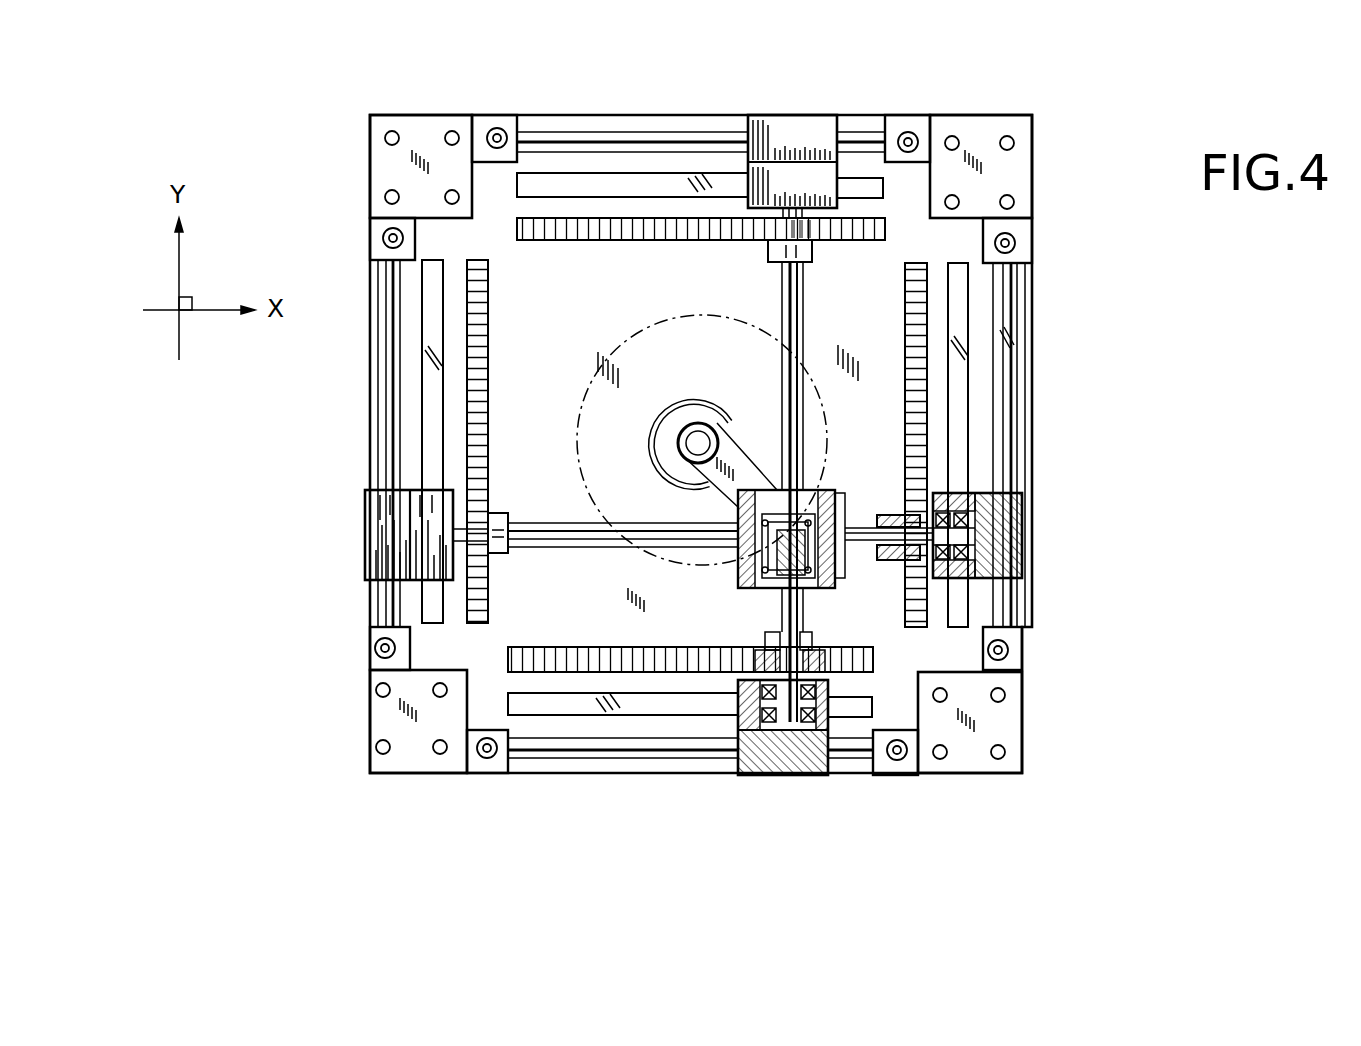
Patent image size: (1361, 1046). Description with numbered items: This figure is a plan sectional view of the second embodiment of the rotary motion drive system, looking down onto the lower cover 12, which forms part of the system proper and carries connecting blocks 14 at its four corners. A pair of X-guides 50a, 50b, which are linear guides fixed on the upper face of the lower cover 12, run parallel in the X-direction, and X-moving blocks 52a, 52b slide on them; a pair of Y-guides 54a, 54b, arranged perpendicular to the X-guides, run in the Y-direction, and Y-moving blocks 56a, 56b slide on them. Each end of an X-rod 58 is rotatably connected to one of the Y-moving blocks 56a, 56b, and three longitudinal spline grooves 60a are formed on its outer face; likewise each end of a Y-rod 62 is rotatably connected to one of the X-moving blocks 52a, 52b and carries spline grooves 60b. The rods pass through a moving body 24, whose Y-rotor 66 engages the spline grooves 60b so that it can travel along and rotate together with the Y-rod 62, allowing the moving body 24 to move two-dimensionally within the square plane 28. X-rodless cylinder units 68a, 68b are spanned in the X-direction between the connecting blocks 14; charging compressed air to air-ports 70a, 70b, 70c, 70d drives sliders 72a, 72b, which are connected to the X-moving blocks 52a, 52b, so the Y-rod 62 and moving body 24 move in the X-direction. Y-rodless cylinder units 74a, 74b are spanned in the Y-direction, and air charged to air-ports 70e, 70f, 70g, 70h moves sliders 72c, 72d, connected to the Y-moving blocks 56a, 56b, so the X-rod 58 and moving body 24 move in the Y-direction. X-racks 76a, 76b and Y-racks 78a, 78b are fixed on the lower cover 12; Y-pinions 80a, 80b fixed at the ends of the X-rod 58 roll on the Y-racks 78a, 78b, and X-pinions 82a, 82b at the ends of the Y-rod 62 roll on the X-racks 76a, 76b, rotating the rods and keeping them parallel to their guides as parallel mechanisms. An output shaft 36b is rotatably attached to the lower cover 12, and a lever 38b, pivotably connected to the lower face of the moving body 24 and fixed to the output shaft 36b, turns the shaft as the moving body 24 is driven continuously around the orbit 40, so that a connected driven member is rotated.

The lower cover 12 is at (493, 197).
The connecting blocks 14 is at (380, 160).
The moving body 24 is at (838, 583).
The square plane 28 is at (510, 378).
The output shaft 36b is at (697, 440).
The lever 38b is at (727, 493).
The orbit 40 is at (640, 545).
The X-guide 50a is at (585, 185).
The X-guide 50b is at (547, 705).
The X-moving block 52a is at (775, 165).
The X-moving block 52b is at (735, 703).
The Y-guide 54a is at (960, 380).
The Y-guide 54b is at (433, 420).
The Y-moving block 56a is at (935, 485).
The Y-moving block 56b is at (435, 515).
The X-rod 58 is at (530, 545).
The spline grooves 60a is at (573, 523).
The spline grooves 60b is at (805, 312).
The Y-rod 62 is at (778, 382).
The Y-rotor 66 is at (805, 590).
The X-rodless cylinder unit 68a is at (670, 140).
The X-rodless cylinder unit 68b is at (670, 762).
The air-port 70a is at (910, 130).
The air-port 70b is at (497, 128).
The air-port 70c is at (487, 758).
The air-port 70d is at (897, 760).
The air-port 70e is at (1008, 243).
The air-port 70f is at (392, 236).
The air-port 70g is at (380, 652).
The air-port 70h is at (1003, 653).
The slider 72a is at (812, 133).
The slider 72b is at (785, 775).
The slider 72c is at (1022, 525).
The slider 72d is at (435, 580).
The Y-rodless cylinder unit 74a is at (1012, 330).
The Y-rodless cylinder unit 74b is at (385, 360).
The X-rack 76a is at (570, 242).
The X-rack 76b is at (512, 672).
The Y-rack 78a is at (910, 265).
The Y-rack 78b is at (470, 607).
The Y-pinion 80a is at (886, 512).
The Y-pinion 80b is at (490, 513).
The X-pinion 82a is at (800, 232).
The X-pinion 82b is at (755, 648).